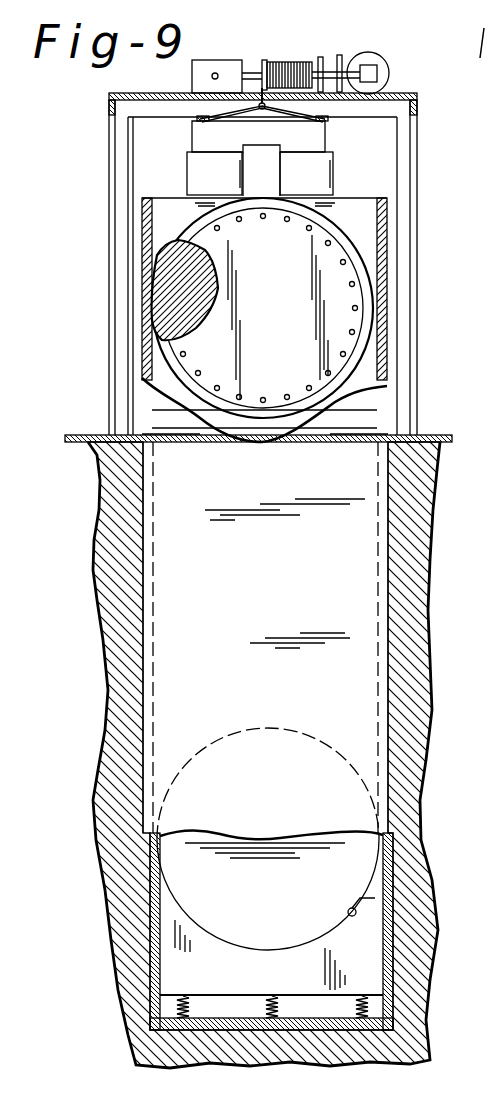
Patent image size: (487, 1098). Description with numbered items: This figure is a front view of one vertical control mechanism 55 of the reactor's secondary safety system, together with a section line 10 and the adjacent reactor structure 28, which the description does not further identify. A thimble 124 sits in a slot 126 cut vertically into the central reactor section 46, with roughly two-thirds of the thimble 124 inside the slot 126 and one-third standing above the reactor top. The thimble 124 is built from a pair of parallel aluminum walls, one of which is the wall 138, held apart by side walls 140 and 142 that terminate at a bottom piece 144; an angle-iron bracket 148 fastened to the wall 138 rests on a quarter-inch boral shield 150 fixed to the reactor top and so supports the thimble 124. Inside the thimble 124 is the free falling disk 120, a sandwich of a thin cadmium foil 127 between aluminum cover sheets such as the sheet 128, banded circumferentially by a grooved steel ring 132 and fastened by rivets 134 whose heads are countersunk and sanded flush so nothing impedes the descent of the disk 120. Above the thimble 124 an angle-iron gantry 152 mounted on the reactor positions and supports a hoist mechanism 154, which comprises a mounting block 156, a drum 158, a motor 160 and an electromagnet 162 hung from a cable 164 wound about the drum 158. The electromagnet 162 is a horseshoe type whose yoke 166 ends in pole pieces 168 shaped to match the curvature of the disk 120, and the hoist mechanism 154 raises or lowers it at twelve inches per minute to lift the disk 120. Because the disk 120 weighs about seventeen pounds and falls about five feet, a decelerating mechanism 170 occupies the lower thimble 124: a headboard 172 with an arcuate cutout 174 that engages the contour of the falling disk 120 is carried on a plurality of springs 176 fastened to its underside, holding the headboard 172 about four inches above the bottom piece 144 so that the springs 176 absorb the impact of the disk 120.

The section line 10 is at (240, 20).
The ground 28 is at (92, 521).
The central reactor section 46 is at (100, 562).
The vertical control mechanism 55 is at (78, 172).
The free falling disk 120 is at (155, 377).
The thimble 124 is at (170, 675).
The slot 126 is at (148, 474).
The cadmium foil 127 is at (150, 297).
The cover sheet 128 is at (355, 323).
The steel ring 132 is at (358, 273).
The rivets 134 is at (326, 246).
The wall 138 is at (175, 628).
The side wall 140 is at (390, 866).
The side wall 142 is at (155, 915).
The bottom piece 144 is at (296, 1024).
The angle-iron bracket 148 is at (370, 428).
The boral shield 150 is at (82, 418).
The angle-iron gantry 152 is at (104, 232).
The hoist mechanism 154 is at (280, 52).
The mounting block 156 is at (198, 76).
The drum 158 is at (255, 68).
The motor 160 is at (365, 53).
The electromagnet 162 is at (345, 156).
The cable 164 is at (230, 122).
The yoke 166 is at (325, 136).
The pole pieces 168 is at (195, 204).
The decelerating mechanism 170 is at (395, 937).
The headboard 172 is at (170, 945).
The arcuate cutout 174 is at (356, 912).
The springs 176 is at (263, 1012).